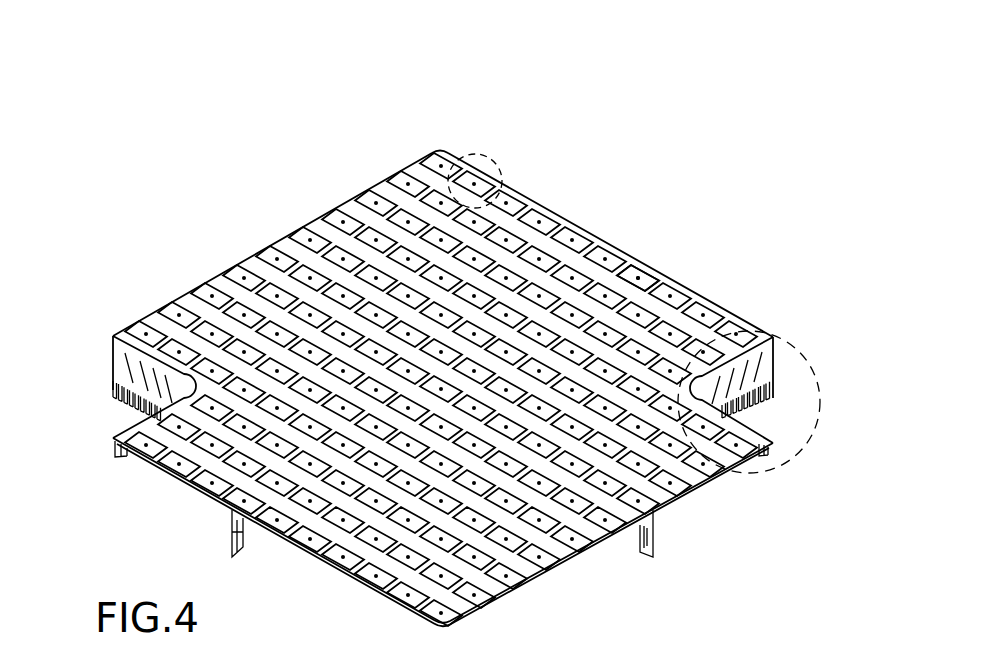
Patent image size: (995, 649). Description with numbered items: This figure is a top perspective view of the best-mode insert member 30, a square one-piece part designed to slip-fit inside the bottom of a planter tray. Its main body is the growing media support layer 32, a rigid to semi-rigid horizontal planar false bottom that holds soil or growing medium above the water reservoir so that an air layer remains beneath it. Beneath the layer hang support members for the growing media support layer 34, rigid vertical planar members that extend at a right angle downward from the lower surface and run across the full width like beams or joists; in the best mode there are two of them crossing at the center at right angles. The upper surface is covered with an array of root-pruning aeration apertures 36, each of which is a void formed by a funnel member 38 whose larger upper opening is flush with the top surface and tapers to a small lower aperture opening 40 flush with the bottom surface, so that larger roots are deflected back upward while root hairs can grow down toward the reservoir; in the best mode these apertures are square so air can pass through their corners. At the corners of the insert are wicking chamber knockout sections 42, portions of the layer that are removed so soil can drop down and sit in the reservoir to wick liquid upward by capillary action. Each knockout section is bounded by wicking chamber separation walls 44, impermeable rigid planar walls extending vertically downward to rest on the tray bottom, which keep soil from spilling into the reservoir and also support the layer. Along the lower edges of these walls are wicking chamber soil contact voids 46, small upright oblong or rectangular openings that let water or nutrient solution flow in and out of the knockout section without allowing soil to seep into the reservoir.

The insert member 30 is at (373, 108).
The growing media support layer 32 is at (538, 207).
The support member for growing media support layer 34 is at (232, 533).
The root-pruning aeration aperture 36 is at (497, 150).
The funnel member 38 is at (628, 278).
The lower aperture opening 40 is at (638, 277).
The wicking chamber knockout section 42 is at (813, 440).
The wicking chamber separation wall 44 is at (115, 353).
The wicking chamber soil contact void 46 is at (112, 390).